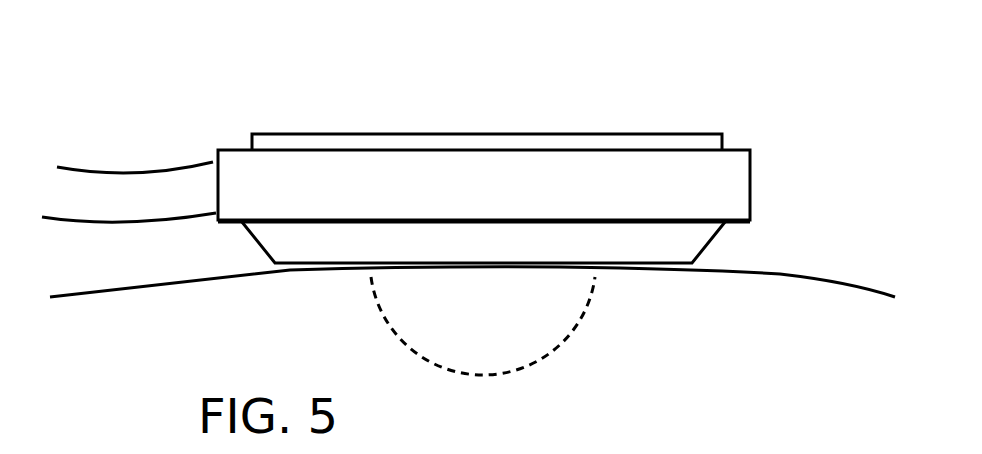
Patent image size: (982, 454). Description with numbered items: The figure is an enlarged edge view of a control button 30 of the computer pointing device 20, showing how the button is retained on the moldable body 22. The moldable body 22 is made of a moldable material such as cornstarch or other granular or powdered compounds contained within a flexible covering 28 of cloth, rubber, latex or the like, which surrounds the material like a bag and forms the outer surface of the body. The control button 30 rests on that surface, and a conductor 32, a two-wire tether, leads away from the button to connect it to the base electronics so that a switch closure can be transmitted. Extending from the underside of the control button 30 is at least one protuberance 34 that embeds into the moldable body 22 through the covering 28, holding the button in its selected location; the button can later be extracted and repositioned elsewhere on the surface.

The computer pointing device 20 is at (519, 85).
The moldable body 22 is at (287, 330).
The flexible covering 28 is at (813, 273).
The control button 30 is at (658, 134).
The conductor 32 is at (147, 170).
The protuberance 34 is at (473, 375).